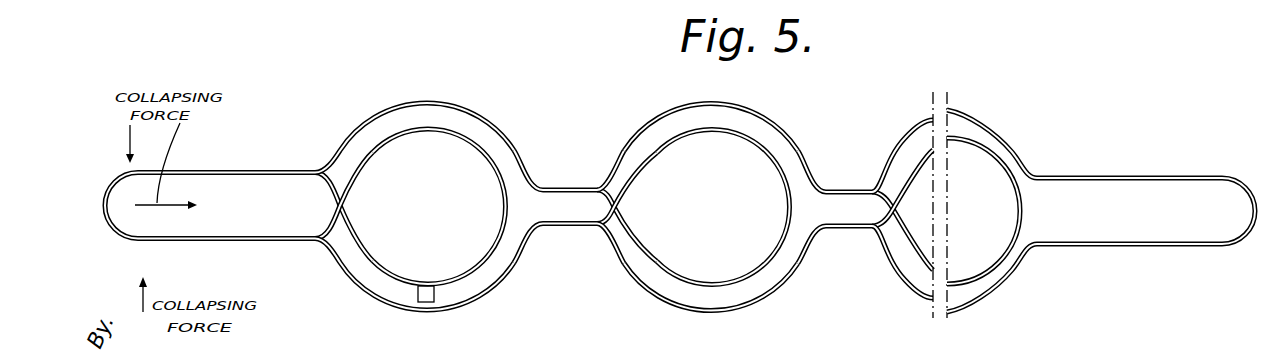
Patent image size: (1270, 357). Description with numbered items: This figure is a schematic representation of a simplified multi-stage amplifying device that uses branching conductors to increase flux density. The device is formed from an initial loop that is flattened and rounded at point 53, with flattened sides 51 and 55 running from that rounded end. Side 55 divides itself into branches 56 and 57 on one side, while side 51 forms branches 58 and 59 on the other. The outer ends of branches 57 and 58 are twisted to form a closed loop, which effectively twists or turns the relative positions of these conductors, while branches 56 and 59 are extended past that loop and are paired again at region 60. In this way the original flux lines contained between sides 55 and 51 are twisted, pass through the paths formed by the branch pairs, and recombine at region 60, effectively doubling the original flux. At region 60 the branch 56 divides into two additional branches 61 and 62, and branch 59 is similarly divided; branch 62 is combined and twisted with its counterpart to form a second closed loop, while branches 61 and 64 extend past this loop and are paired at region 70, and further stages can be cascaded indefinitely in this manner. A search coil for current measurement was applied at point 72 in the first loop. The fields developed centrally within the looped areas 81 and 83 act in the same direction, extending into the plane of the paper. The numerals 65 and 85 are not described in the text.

The flattened side 51 is at (240, 241).
The rounded point 53 is at (108, 222).
The flattened side 55 is at (214, 170).
The branch 56 is at (355, 130).
The branch 57 is at (323, 178).
The branch 58 is at (327, 226).
The branch 59 is at (345, 275).
The region 60 is at (559, 200).
The branch 61 is at (662, 114).
The branch 62 is at (620, 168).
The branch 64 is at (623, 279).
The crossing strands at neck 65 is at (600, 208).
The region 70 is at (836, 201).
The point 72 is at (422, 302).
The area 81 is at (446, 190).
The area 83 is at (733, 191).
The end loop opening 85 is at (1165, 216).